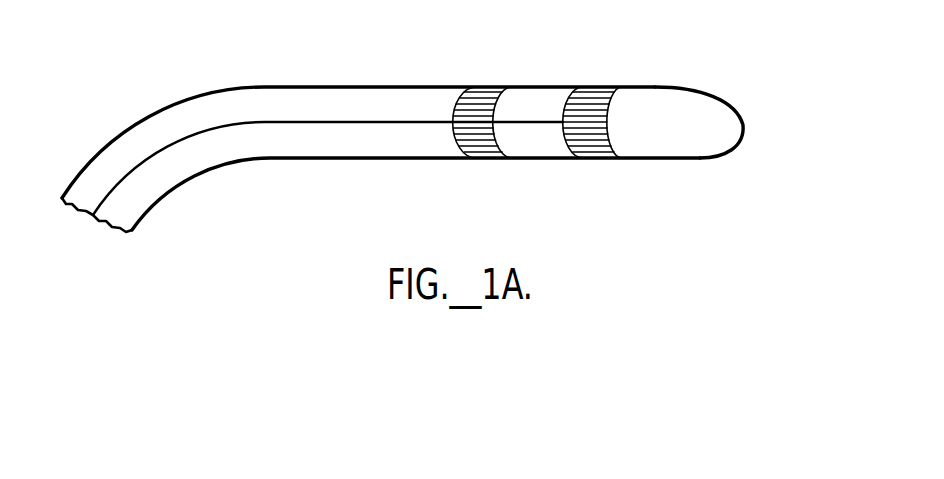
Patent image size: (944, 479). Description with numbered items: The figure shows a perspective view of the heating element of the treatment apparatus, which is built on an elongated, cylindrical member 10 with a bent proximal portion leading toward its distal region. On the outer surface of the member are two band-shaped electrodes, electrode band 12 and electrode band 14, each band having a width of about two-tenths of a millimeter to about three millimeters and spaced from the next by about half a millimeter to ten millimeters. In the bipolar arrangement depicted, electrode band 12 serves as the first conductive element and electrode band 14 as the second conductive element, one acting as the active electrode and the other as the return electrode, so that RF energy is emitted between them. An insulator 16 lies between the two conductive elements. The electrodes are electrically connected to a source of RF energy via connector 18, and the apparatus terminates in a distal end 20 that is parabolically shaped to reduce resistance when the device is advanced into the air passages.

The elongated cylindrical member 10 is at (447, 125).
The electrode band 12 is at (490, 86).
The electrode band 14 is at (607, 84).
The insulator 16 is at (542, 158).
The connector 18 is at (222, 122).
The distal end 20 is at (745, 122).